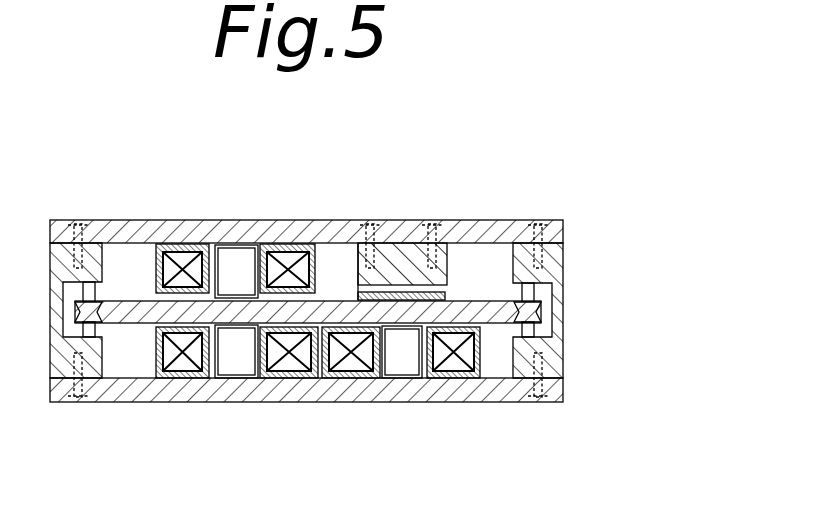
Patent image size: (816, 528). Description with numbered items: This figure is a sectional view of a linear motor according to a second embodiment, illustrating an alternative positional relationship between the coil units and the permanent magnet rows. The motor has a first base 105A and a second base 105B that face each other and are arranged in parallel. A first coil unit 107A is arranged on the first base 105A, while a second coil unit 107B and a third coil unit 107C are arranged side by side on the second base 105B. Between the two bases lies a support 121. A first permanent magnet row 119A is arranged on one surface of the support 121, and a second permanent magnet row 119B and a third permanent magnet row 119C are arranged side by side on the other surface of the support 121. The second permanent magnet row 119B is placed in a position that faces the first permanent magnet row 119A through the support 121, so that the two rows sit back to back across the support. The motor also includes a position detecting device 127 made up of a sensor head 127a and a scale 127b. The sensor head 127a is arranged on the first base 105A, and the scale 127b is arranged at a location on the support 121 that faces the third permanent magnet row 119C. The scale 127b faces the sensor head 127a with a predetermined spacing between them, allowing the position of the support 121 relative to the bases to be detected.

The first base 105A is at (235, 247).
The second base 105B is at (292, 378).
The first coil unit 107A is at (180, 244).
The second coil unit 107B is at (178, 378).
The third coil unit 107C is at (353, 378).
The first permanent magnet row 119A is at (261, 243).
The second permanent magnet row 119B is at (243, 378).
The third permanent magnet row 119C is at (410, 378).
The support 121 is at (343, 300).
The position detecting device 127 is at (445, 198).
The sensor head 127a is at (400, 260).
The scale 127b is at (445, 292).